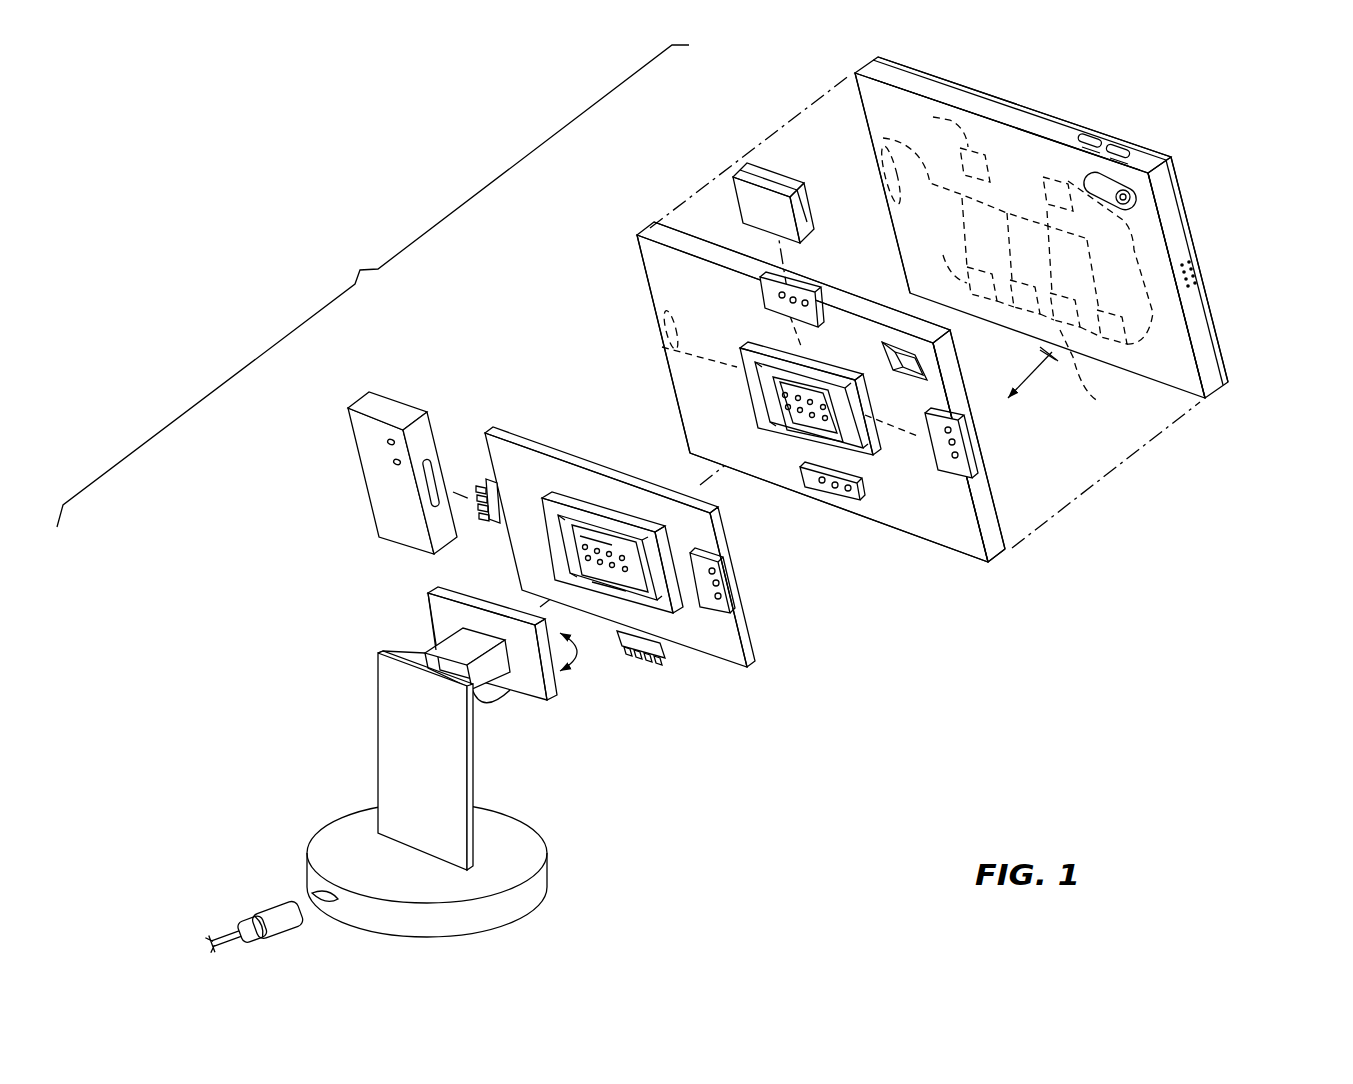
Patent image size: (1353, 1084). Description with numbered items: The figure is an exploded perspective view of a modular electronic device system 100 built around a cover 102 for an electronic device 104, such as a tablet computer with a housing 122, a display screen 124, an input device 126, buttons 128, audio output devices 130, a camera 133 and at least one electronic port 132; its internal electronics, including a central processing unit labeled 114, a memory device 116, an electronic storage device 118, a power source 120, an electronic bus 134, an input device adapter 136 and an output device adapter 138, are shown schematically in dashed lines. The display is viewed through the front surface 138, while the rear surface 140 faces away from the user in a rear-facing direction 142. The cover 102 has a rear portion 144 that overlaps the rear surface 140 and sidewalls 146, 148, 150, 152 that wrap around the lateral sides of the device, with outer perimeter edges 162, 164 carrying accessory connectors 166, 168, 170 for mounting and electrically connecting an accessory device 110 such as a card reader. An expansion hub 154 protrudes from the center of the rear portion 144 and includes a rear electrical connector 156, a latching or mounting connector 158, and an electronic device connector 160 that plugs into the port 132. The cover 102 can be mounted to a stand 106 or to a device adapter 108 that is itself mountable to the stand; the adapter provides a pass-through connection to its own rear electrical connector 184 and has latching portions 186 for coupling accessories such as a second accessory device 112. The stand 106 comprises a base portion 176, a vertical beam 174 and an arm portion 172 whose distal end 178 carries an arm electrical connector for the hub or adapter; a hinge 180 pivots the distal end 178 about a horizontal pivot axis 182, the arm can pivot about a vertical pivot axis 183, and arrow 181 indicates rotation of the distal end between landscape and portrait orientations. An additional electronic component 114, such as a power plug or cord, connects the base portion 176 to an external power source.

The modular electronic device system 100 is at (373, 286).
The cover 102 is at (1015, 558).
The electronic device 104 is at (1242, 390).
The stand 106 is at (428, 760).
The device adapter 108 is at (758, 670).
The accessory device 110 is at (777, 160).
The second accessory device 112 is at (350, 492).
The additional electronic component 114 is at (178, 903).
The memory device 116 is at (1019, 372).
The electronic storage device 118 is at (1098, 401).
The power source 120 is at (1065, 246).
The housing 122 is at (925, 82).
The display screen 124 is at (1180, 183).
The input device 126 is at (1198, 264).
The buttons 128 is at (1095, 138).
The audio output devices 130 is at (1200, 290).
The electronic port 132 is at (875, 165).
The camera 133 is at (1140, 195).
The electronic bus 134 is at (880, 138).
The input device adapter 136 is at (945, 117).
The output device adapter 138 is at (995, 97).
The rear surface 140 is at (862, 88).
The rear-facing direction 142 is at (1036, 383).
The rear portion 144 is at (978, 560).
The sidewall 146 is at (985, 492).
The sidewall 148 is at (648, 230).
The sidewall 150 is at (748, 476).
The sidewall 152 is at (682, 398).
The expansion hub 154 is at (845, 468).
The rear electrical connector 156 is at (785, 398).
The mounting connector 158 is at (773, 372).
The electronic device connector 160 is at (660, 333).
The outer perimeter edge 162 is at (985, 519).
The outer perimeter edge 164 is at (877, 317).
The accessory connector 166 is at (968, 447).
The accessory connector 168 is at (808, 292).
The accessory connector 170 is at (854, 522).
The arm portion 172 is at (412, 652).
The vertical beam 174 is at (388, 743).
The base portion 176 is at (338, 828).
The distal end 178 is at (551, 703).
The hinge 180 is at (483, 705).
The arrow 181 is at (584, 675).
The horizontal pivot axis 182 is at (372, 645).
The vertical pivot axis 183 is at (425, 630).
The rear electrical connector 184 is at (540, 515).
The latching portions 186 is at (476, 487).